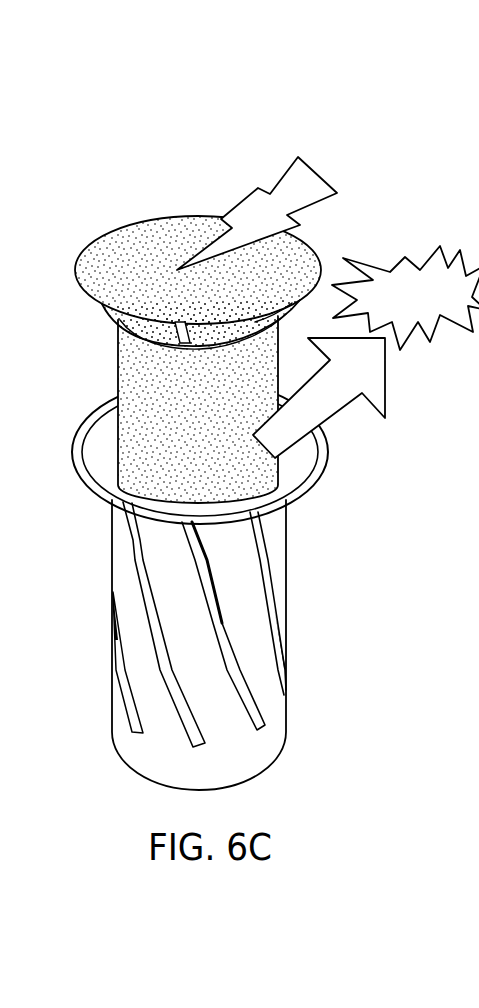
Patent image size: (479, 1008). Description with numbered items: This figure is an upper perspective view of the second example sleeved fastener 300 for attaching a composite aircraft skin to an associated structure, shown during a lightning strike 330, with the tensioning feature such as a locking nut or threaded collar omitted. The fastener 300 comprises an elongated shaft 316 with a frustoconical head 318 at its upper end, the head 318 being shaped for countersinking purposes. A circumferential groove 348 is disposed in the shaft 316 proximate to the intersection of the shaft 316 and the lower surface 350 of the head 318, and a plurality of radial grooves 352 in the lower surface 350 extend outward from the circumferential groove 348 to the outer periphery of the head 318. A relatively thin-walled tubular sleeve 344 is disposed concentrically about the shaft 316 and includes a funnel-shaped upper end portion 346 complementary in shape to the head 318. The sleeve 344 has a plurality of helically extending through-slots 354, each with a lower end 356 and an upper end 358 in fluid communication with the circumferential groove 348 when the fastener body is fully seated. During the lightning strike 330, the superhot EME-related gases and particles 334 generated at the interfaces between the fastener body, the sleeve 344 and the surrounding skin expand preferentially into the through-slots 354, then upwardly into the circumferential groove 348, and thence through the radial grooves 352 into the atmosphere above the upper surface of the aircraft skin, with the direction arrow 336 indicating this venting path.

The sleeved fastener 300 is at (284, 108).
The elongated shaft 316 is at (145, 435).
The head 318 is at (116, 238).
The lightning strike 330 is at (320, 177).
The EME-related gases and particles 334 is at (441, 254).
The direction arrow 336 is at (323, 420).
The tubular sleeve 344 is at (277, 739).
The funnel-shaped upper end portion 346 is at (313, 470).
The circumferential groove 348 is at (175, 333).
The lower surface of the head 350 is at (222, 333).
The radial grooves 352 is at (178, 342).
The helically extending through-slots 354 is at (224, 633).
The lower end of the through-slot 356 is at (197, 749).
The upper end of the through-slot 358 is at (180, 523).